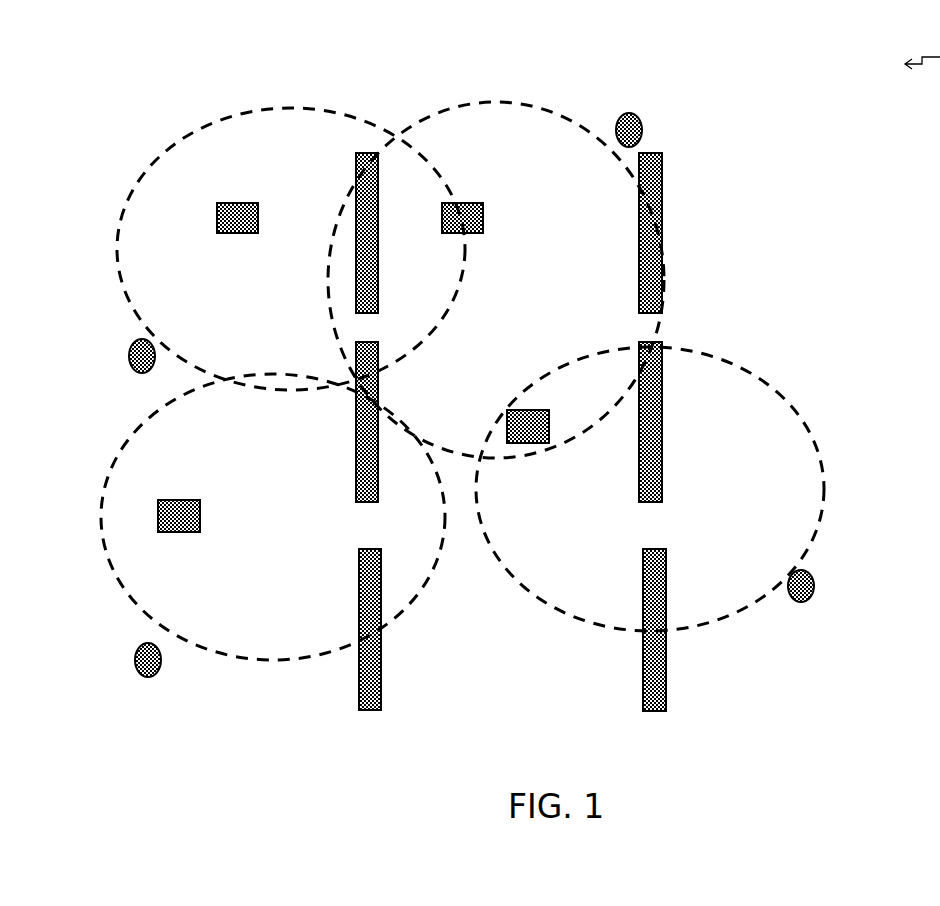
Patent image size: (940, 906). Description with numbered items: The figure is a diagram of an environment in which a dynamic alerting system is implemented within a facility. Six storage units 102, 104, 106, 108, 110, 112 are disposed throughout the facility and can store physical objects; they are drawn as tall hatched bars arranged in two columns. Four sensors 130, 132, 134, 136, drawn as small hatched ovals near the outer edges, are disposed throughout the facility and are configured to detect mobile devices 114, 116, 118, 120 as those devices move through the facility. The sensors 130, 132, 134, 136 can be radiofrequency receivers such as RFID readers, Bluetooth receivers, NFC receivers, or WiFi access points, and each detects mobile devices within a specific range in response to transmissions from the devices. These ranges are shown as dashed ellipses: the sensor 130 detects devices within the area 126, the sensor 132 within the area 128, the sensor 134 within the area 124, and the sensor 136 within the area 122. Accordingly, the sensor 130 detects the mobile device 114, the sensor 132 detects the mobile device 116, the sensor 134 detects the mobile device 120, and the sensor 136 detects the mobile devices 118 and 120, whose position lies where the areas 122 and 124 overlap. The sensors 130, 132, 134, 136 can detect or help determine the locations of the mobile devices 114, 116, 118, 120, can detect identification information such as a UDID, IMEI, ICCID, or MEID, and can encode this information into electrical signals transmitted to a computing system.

The storage unit 102 is at (377, 153).
The storage unit 104 is at (648, 152).
The storage unit 106 is at (355, 343).
The storage unit 108 is at (640, 342).
The storage unit 110 is at (360, 548).
The storage unit 112 is at (643, 549).
The mobile device 114 is at (217, 217).
The mobile device 116 is at (182, 500).
The mobile device 118 is at (483, 202).
The mobile device 120 is at (548, 409).
The area 122 is at (662, 245).
The area 124 is at (777, 398).
The area 126 is at (165, 150).
The area 128 is at (222, 652).
The sensor 130 is at (128, 357).
The sensor 132 is at (135, 658).
The sensor 134 is at (815, 586).
The sensor 136 is at (637, 112).